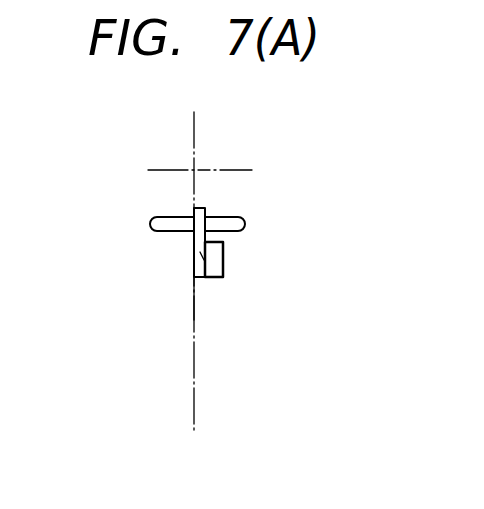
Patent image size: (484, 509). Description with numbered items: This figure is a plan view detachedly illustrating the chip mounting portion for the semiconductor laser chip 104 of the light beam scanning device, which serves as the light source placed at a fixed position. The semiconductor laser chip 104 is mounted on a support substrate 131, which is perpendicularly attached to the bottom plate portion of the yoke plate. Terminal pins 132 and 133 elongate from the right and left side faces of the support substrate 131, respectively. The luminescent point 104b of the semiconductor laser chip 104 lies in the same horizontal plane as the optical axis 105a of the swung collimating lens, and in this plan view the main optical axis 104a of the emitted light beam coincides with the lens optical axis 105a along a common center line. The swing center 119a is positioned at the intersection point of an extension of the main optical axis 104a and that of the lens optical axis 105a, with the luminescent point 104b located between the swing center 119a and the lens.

The semiconductor laser chip 104 is at (194, 237).
The main optical axis 104a is at (257, 275).
The optical axis 105a is at (194, 333).
The luminescent point 104b is at (200, 252).
The swing center 119a is at (194, 170).
The support substrate 131 is at (205, 209).
The terminal pin 132 is at (242, 232).
The terminal pin 133 is at (155, 216).